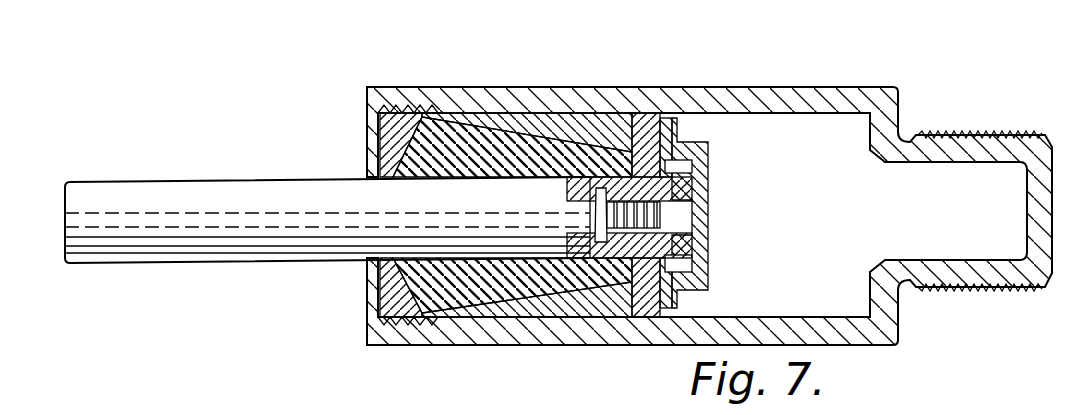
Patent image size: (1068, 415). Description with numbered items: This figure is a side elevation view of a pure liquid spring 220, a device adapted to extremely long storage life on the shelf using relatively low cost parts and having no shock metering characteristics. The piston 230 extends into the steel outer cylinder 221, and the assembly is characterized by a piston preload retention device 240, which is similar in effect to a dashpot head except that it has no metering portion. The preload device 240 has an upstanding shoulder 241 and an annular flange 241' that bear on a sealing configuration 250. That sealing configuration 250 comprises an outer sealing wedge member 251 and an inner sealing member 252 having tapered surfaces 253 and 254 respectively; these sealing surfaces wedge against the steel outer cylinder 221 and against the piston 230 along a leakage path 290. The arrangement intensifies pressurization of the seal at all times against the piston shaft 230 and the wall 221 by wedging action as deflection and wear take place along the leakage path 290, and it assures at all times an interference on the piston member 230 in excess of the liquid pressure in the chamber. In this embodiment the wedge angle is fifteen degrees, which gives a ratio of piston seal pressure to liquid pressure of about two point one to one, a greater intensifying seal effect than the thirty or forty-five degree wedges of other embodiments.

The liquid spring 220 is at (947, 44).
The steel outer cylinder 221 is at (455, 340).
The piston 230 is at (165, 190).
The piston preload retention device 240 is at (710, 207).
The upstanding shoulder 241 is at (732, 213).
The annular flange 241' is at (707, 177).
The sealing configuration 250 is at (572, 118).
The outer sealing wedge member 251 is at (520, 120).
The inner sealing member 252 is at (460, 118).
The tapered surface 253 is at (549, 294).
The tapered surface 254 is at (505, 302).
The leakage path 290 is at (428, 183).